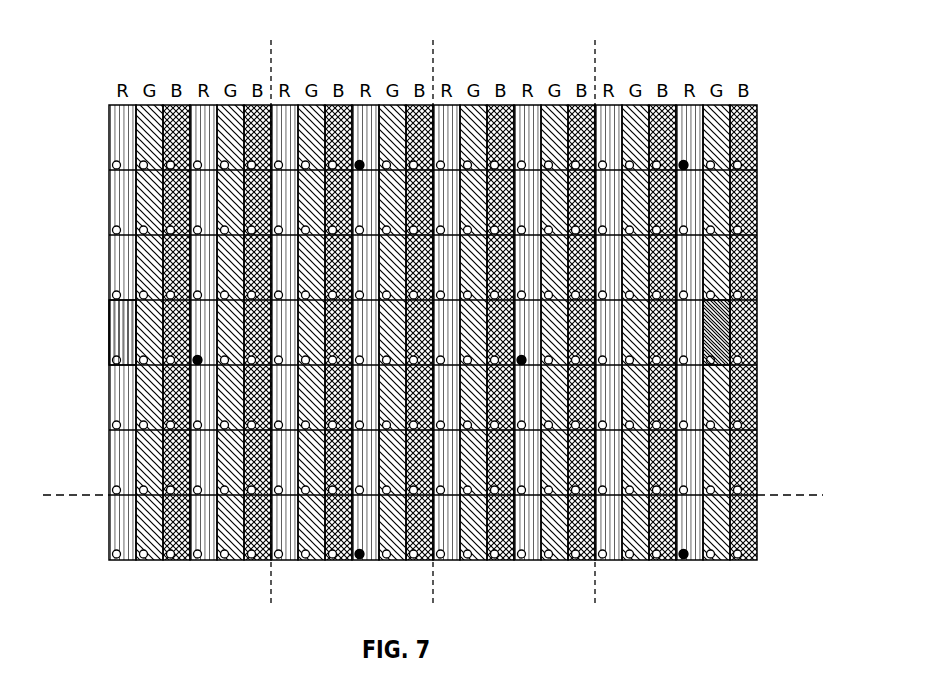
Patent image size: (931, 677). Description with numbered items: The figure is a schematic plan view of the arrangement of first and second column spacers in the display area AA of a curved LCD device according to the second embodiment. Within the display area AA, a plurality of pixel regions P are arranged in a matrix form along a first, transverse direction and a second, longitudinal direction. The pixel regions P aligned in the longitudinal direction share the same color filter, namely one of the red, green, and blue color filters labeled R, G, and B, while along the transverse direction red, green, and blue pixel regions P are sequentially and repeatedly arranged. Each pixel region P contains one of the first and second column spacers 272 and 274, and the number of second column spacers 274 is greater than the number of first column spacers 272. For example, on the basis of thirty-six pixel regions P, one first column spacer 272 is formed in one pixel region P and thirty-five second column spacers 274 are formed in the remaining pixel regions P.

The display area AA is at (107, 229).
The pixel region P is at (116, 333).
The first column spacer 272 is at (684, 163).
The second column spacer 274 is at (713, 295).